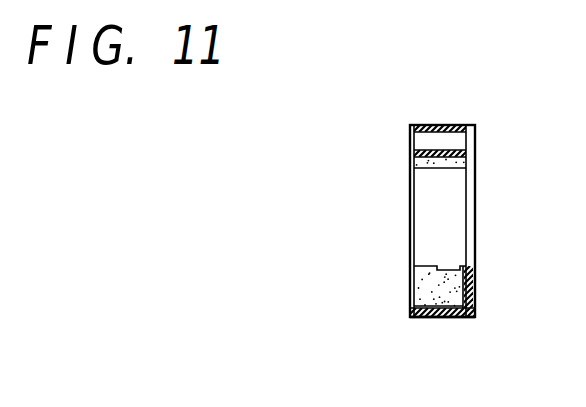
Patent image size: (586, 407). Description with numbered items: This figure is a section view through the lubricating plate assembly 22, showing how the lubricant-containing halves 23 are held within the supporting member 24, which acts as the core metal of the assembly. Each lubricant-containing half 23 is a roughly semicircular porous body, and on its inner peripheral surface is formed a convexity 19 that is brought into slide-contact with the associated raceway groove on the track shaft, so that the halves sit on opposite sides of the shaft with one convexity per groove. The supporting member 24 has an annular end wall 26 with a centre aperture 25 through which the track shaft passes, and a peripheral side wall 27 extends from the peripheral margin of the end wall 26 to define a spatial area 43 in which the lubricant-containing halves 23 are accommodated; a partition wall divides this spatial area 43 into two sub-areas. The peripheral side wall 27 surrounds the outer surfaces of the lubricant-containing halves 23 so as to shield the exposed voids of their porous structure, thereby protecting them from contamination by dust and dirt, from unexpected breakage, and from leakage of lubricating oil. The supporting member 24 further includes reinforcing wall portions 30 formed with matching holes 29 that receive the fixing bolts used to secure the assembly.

The lubricating plate assembly 22 is at (481, 134).
The peripheral side wall 27 is at (438, 125).
The matching holes 29 is at (424, 138).
The reinforcing wall portions 30 is at (412, 167).
The convexity 19 is at (437, 266).
The centre aperture 25 is at (470, 268).
The lubricant-containing half 23 is at (428, 282).
The end wall 26 is at (473, 282).
The spatial area 43 is at (428, 290).
The supporting member 24 is at (472, 309).